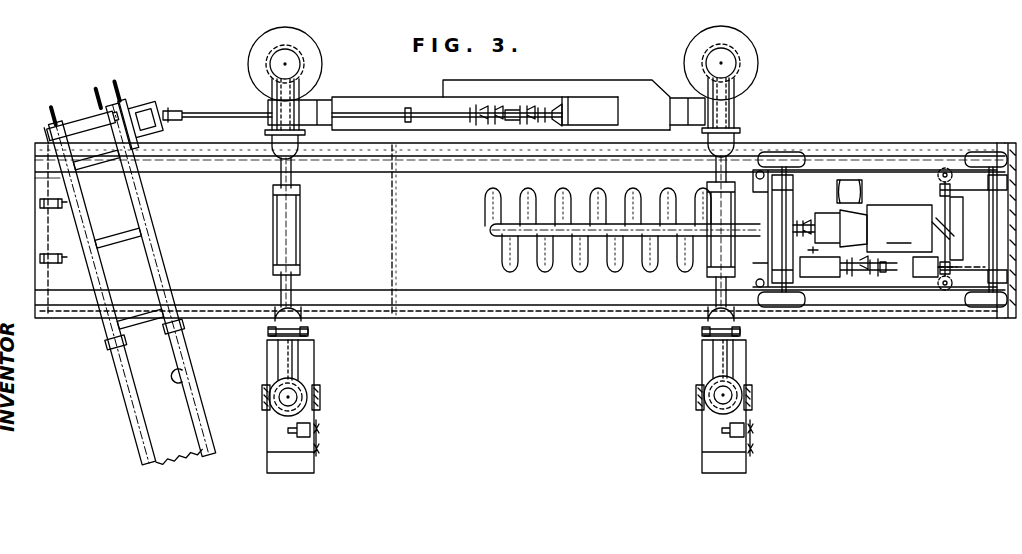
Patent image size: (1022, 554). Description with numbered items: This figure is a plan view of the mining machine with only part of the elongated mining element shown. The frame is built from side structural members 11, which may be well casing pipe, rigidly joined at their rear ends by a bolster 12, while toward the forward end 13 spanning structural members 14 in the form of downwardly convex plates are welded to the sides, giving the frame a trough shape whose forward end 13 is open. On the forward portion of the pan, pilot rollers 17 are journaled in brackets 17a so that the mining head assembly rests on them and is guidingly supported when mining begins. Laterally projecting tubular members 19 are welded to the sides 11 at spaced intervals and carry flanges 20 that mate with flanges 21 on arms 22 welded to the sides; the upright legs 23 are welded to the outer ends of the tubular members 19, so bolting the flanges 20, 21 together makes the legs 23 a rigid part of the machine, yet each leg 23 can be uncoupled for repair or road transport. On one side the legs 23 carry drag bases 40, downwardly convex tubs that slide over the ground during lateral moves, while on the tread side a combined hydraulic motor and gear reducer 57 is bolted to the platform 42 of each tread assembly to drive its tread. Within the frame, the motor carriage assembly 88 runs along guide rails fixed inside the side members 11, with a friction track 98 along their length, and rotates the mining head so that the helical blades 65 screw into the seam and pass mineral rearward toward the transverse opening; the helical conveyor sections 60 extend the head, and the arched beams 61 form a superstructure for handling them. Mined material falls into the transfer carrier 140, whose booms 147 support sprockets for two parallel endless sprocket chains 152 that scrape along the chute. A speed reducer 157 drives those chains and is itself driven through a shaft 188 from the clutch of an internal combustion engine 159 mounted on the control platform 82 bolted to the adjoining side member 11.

The side structural members 11 is at (447, 312).
The bolster 12 is at (1008, 312).
The forward end 13 is at (36, 186).
The spanning structural members 14 is at (50, 312).
The pilot rollers 17 is at (43, 254).
The brackets 17a is at (40, 203).
The tubular members 19 is at (275, 97).
The flanges 20 is at (268, 340).
The mating flanges 21 is at (268, 331).
The arms 22 is at (308, 332).
The upright legs 23 is at (300, 50).
The drag bases 40 is at (318, 58).
The platform 42 is at (312, 372).
The combined hydraulic motor and gear reducer 57 is at (288, 430).
The helical conveyor sections 60 is at (498, 239).
The arched beams 61 is at (289, 176).
The helical blades 65 is at (578, 272).
The control platform 82 is at (426, 100).
The motor carriage assembly 88 is at (880, 229).
The friction track 98 is at (41, 167).
The transfer carrier 140 is at (144, 361).
The booms 147 is at (198, 422).
The endless sprocket chains 152 is at (186, 376).
The speed reducer 157 is at (150, 116).
The internal combustion engine 159 is at (587, 104).
The shaft 188 is at (351, 112).